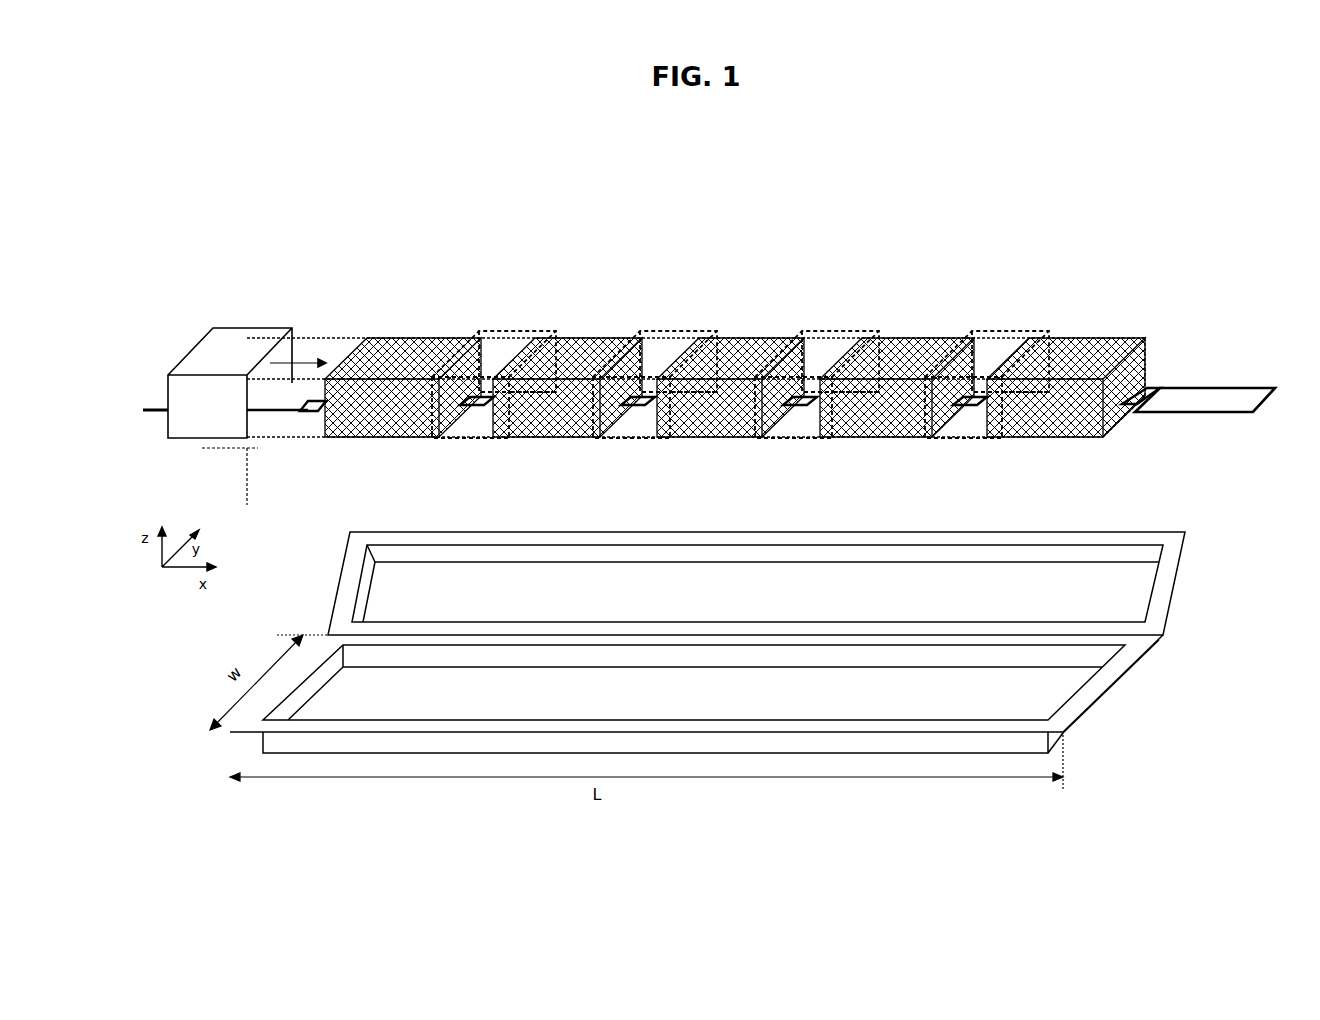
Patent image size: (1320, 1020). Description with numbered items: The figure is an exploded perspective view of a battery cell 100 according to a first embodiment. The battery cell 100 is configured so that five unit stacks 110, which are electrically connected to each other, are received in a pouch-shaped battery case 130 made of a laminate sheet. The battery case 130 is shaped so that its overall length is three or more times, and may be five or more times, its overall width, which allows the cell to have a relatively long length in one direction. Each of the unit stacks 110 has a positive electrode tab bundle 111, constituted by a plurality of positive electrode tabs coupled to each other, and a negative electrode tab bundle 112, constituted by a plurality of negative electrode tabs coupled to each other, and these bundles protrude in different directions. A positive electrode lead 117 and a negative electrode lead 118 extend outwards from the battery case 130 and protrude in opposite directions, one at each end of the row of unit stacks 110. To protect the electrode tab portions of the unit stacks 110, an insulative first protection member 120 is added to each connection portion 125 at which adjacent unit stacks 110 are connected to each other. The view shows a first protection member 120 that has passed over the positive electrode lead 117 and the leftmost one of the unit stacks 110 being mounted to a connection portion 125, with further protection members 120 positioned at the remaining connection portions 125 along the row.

The battery cell 100 is at (176, 245).
The unit stack 110 is at (403, 345).
The positive electrode tab bundle 111 is at (309, 414).
The negative electrode tab bundle 112 is at (450, 437).
The positive electrode lead 117 is at (150, 414).
The negative electrode lead 118 is at (1185, 415).
The first protection member 120 is at (237, 343).
The connection portion 125 is at (505, 450).
The battery case 130 is at (1133, 668).